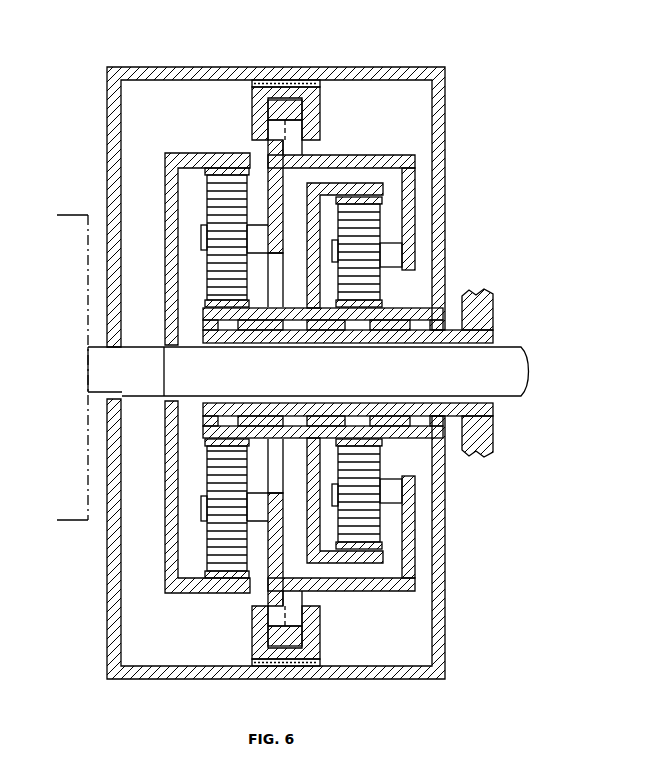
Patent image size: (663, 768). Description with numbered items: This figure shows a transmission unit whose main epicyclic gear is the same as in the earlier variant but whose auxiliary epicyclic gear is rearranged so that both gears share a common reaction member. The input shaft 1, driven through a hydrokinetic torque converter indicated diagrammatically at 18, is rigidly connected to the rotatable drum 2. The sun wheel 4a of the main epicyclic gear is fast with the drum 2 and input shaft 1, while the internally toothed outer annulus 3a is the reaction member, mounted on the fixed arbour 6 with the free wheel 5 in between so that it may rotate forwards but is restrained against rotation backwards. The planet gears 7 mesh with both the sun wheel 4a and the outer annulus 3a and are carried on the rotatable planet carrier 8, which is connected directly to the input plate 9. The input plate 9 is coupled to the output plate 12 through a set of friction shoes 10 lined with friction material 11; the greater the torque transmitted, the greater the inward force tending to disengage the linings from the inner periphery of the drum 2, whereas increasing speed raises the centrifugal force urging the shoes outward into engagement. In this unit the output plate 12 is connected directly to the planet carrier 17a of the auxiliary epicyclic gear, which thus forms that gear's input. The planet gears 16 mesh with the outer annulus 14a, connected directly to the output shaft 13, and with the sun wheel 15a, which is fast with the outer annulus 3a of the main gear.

The input shaft 1 is at (100, 367).
The rotatable drum 2 is at (353, 72).
The outer annulus 3a is at (382, 195).
The sun wheel 4a is at (382, 303).
The free wheel 5 is at (268, 327).
The fixed arbour 6 is at (493, 333).
The planet gears 7 is at (378, 220).
The planet carrier 8 is at (415, 230).
The input plate 9 is at (297, 154).
The friction shoes 10 is at (321, 113).
The friction material 11 is at (298, 85).
The output plate 12 is at (268, 152).
The output shaft 13 is at (502, 371).
The outer annulus 14a is at (166, 172).
The sun wheel 15a is at (205, 303).
The planet gears 16 is at (213, 208).
The planet carrier 17a is at (283, 247).
The hydrokinetic torque converter 18 is at (72, 233).